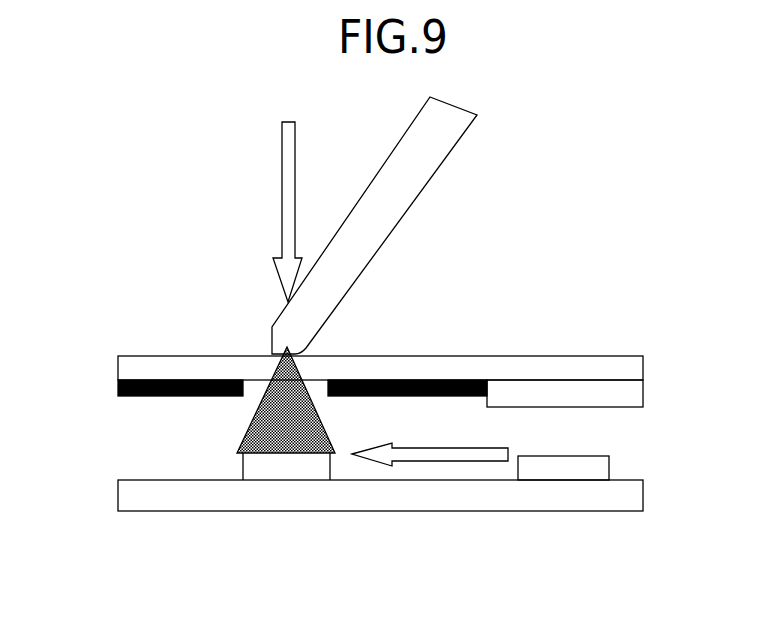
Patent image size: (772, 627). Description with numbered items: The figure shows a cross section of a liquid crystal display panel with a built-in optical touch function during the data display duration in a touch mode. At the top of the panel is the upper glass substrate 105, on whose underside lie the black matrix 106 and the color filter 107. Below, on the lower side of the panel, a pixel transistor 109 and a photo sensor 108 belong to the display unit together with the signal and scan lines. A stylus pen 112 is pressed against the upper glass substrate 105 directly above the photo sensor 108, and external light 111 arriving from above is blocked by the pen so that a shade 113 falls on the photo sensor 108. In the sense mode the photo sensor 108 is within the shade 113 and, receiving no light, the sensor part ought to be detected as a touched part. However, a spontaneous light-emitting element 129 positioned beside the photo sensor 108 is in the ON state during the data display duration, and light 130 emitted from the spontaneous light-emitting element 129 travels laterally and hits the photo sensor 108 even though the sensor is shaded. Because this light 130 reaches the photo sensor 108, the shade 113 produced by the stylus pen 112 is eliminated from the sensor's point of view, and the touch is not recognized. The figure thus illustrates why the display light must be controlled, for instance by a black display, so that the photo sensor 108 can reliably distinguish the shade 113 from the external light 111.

The upper glass substrate 105 is at (643, 368).
The black matrix 106 is at (118, 383).
The color filter 107 is at (643, 395).
The photo sensor 108 is at (330, 468).
The pixel transistor 109 is at (643, 493).
The external light 111 is at (282, 170).
The stylus pen 112 is at (390, 237).
The shade 113 is at (245, 432).
The spontaneous light-emitting element 129 is at (609, 465).
The light emitted from the spontaneous light-emitting element 130 is at (448, 461).